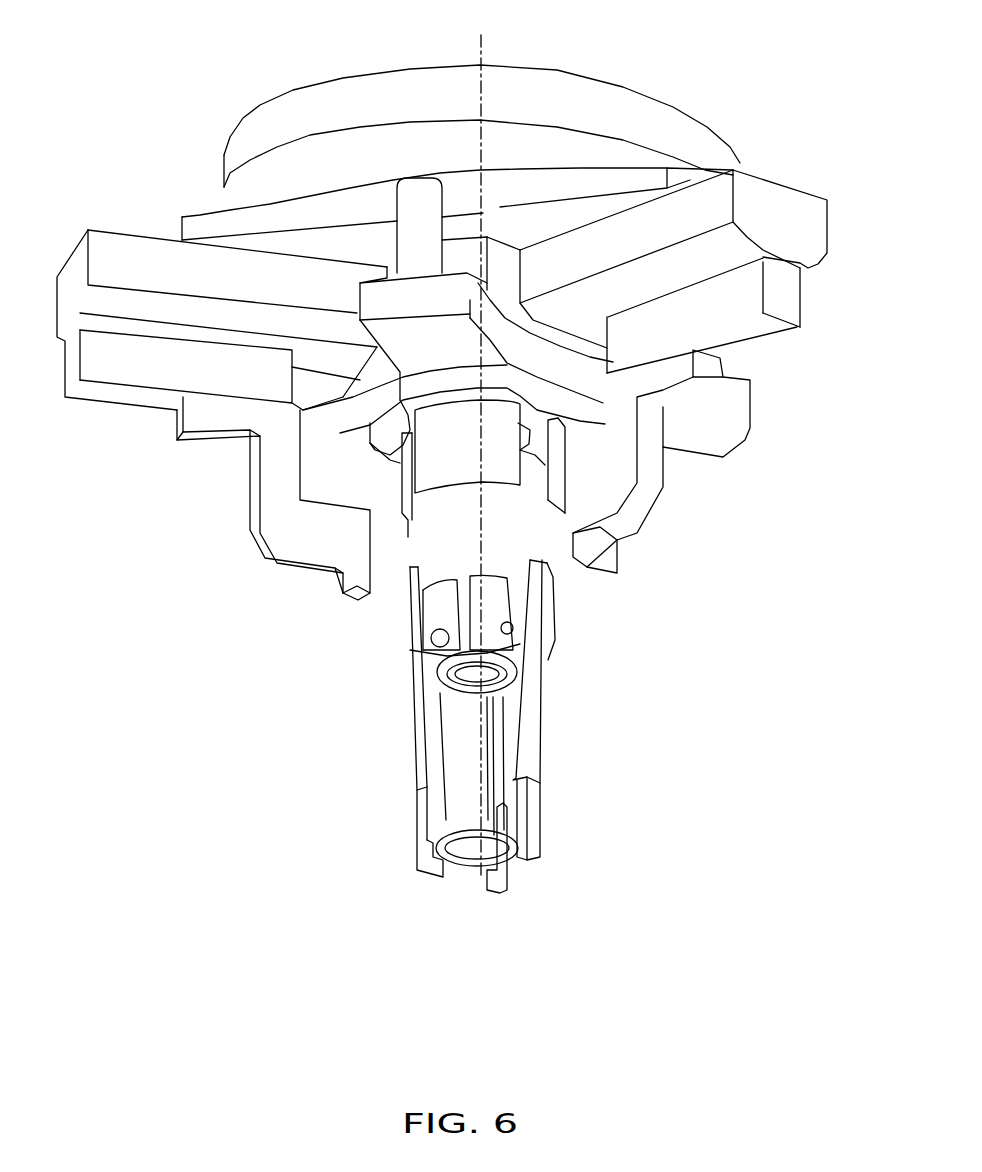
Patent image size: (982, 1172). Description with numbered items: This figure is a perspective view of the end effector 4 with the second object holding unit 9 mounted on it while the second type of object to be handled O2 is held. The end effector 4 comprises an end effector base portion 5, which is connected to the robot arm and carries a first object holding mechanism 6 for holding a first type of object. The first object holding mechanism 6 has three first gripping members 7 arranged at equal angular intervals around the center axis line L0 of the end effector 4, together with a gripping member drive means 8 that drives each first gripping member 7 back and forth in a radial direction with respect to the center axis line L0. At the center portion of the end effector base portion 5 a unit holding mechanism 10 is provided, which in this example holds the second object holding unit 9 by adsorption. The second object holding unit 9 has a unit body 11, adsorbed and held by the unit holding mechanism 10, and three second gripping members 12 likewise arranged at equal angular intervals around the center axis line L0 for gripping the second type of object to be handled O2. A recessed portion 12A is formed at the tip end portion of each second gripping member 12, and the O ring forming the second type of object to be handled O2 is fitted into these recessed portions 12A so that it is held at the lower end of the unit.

The end effector 4 is at (160, 146).
The end effector base portion 5 is at (688, 122).
The first object holding mechanism 6 is at (447, 368).
The first gripping member 7 is at (264, 540).
The gripping member drive means 8 is at (118, 248).
The second object holding unit 9 is at (478, 763).
The unit holding mechanism 10 is at (438, 470).
The unit body 11 is at (555, 578).
The second gripping member 12 is at (410, 817).
The recessed portion 12A is at (488, 898).
The center axis line L0 is at (480, 732).
The second type of object to be handled O2 is at (473, 862).